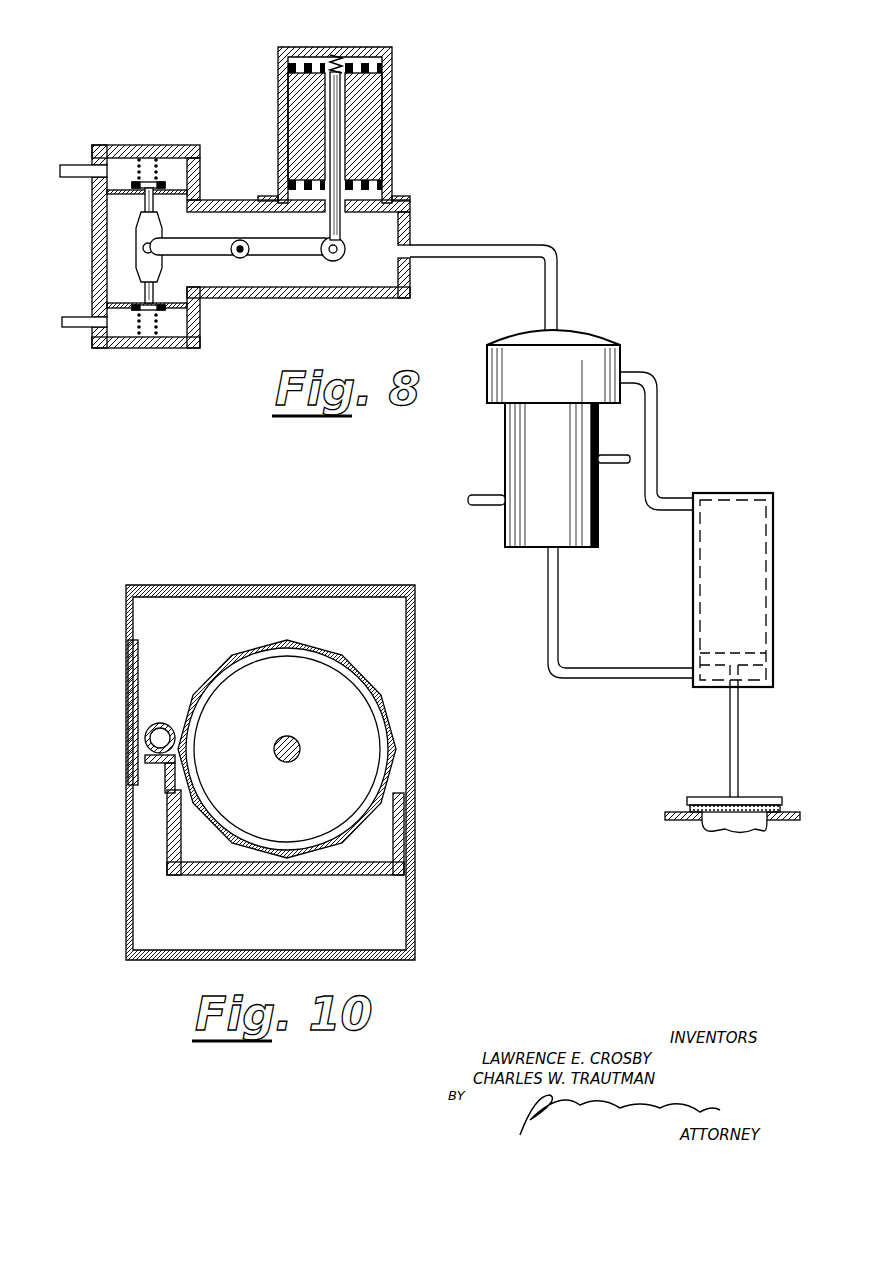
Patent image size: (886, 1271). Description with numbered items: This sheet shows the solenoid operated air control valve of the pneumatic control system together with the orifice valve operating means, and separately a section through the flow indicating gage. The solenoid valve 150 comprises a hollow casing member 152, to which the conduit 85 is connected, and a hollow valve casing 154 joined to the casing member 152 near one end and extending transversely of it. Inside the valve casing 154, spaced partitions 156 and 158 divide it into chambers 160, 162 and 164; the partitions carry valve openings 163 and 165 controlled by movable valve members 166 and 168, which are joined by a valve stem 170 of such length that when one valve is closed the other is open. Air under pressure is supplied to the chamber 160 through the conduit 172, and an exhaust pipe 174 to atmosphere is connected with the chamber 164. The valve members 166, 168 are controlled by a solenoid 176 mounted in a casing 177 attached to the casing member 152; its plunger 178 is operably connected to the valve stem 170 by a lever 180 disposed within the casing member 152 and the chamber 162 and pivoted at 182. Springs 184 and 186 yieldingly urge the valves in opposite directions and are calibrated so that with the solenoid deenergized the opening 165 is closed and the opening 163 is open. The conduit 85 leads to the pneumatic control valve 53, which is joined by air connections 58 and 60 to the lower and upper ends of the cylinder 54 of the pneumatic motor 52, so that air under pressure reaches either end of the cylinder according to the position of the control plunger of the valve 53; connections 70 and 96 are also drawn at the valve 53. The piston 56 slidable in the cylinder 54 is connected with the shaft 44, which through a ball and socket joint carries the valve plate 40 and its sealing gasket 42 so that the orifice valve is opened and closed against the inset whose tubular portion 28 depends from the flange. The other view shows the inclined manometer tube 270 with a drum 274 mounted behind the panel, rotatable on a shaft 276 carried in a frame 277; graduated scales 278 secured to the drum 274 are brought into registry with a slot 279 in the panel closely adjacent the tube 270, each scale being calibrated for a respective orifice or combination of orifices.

In FIG. 8, the solenoid valve 150 is at (258, 221).
In FIG. 8, the hollow casing member 152 is at (405, 220).
In FIG. 8, the hollow valve casing 154 is at (178, 150).
In FIG. 8, the partition 156 is at (118, 195).
In FIG. 8, the partition 158 is at (118, 305).
In FIG. 8, the chamber 160 is at (185, 330).
In FIG. 8, the chamber 162 is at (187, 292).
In FIG. 8, the valve opening 163 is at (176, 195).
In FIG. 8, the chamber 164 is at (118, 160).
In FIG. 8, the valve opening 165 is at (140, 300).
In FIG. 8, the movable valve member 166 is at (160, 185).
In FIG. 8, the movable valve member 168 is at (138, 310).
In FIG. 8, the valve stem 170 is at (152, 230).
In FIG. 8, the conduit 172 is at (75, 325).
In FIG. 8, the exhaust pipe 174 is at (88, 165).
In FIG. 8, the solenoid 176 is at (365, 108).
In FIG. 8, the casing 177 is at (385, 68).
In FIG. 8, the plunger 178 is at (340, 160).
In FIG. 8, the lever 180 is at (318, 258).
In FIG. 8, the pivot 182 is at (242, 246).
In FIG. 8, the spring 184 is at (140, 158).
In FIG. 8, the spring 186 is at (155, 330).
In FIG. 8, the conduit 85 is at (500, 250).
In FIG. 8, the pneumatic control valve 53 is at (508, 435).
In FIG. 8, the air connection 60 is at (657, 425).
In FIG. 8, the reservoir outlet 70 is at (615, 463).
In FIG. 8, the reservoir inlet 96 is at (478, 506).
In FIG. 8, the pneumatic motor 52 is at (705, 572).
In FIG. 8, the cylinder 54 is at (693, 586).
In FIG. 8, the piston 56 is at (705, 660).
In FIG. 8, the air connection 58 is at (592, 678).
In FIG. 8, the shaft 44 is at (730, 729).
In FIG. 8, the sealing gasket 42 is at (690, 807).
In FIG. 8, the valve plate 40 is at (748, 800).
In FIG. 8, the tubular portion 28 is at (766, 830).
In FIG. 10, the slot 279 is at (128, 652).
In FIG. 10, the inclined manometer tube 270 is at (146, 738).
In FIG. 10, the drum 274 is at (357, 700).
In FIG. 10, the shaft 276 is at (300, 755).
In FIG. 10, the frame 277 is at (404, 824).
In FIG. 10, the graduated scales 278 is at (300, 648).